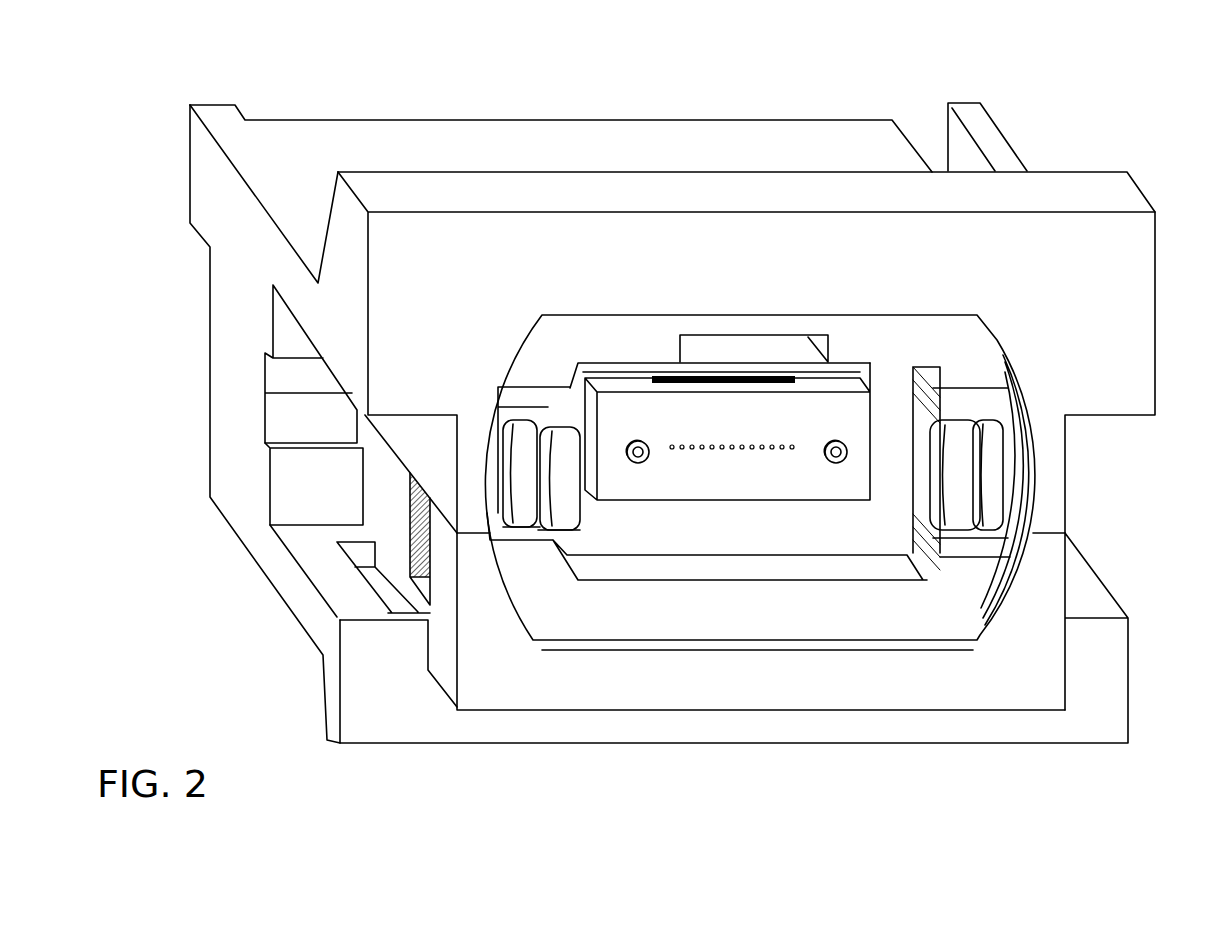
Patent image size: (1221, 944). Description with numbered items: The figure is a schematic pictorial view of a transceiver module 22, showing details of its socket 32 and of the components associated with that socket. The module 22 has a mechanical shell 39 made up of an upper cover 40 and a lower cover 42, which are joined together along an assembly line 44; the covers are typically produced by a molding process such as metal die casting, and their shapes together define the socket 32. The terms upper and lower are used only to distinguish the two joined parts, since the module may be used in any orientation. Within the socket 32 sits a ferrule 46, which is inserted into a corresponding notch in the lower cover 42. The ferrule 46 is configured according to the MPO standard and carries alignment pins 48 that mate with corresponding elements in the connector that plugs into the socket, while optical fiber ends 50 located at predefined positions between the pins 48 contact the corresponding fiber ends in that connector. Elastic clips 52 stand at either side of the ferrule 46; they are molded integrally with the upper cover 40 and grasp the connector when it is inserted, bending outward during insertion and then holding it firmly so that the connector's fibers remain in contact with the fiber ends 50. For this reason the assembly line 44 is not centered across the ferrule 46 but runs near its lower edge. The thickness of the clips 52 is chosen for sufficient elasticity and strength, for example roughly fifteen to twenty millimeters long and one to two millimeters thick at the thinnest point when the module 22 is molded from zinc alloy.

The module 22 is at (1136, 110).
The socket 32 is at (955, 633).
The mechanical shell 39 is at (177, 95).
The upper cover 40 is at (1143, 257).
The lower cover 42 is at (1121, 679).
The assembly line 44 is at (1052, 533).
The ferrule 46 is at (742, 492).
The alignment pins 48 is at (640, 464).
The optical fiber ends 50 is at (686, 443).
The elastic clips 52 is at (522, 412).